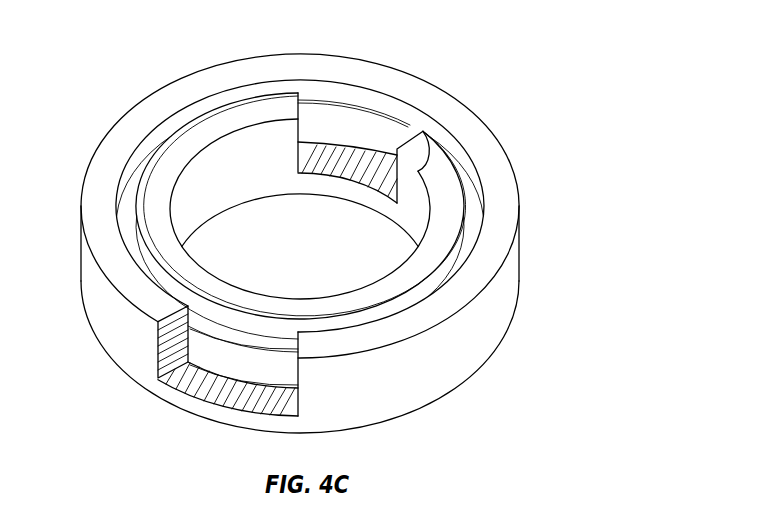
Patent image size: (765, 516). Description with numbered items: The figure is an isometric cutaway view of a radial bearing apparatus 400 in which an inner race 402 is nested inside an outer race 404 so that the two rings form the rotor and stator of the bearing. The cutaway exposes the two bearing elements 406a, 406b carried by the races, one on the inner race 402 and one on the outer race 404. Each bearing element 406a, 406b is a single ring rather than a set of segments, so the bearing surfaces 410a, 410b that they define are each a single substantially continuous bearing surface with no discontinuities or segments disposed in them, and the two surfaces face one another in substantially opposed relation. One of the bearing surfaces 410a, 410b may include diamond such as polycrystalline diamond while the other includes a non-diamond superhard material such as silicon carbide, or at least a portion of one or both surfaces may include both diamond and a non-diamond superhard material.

The bearing apparatus 400 is at (368, 241).
The inner race 402 is at (443, 213).
The outer race 404 is at (473, 330).
The bearing element 406a is at (395, 103).
The bearing element 406b is at (202, 392).
The bearing surface 410a is at (382, 138).
The bearing surface 410b is at (261, 359).